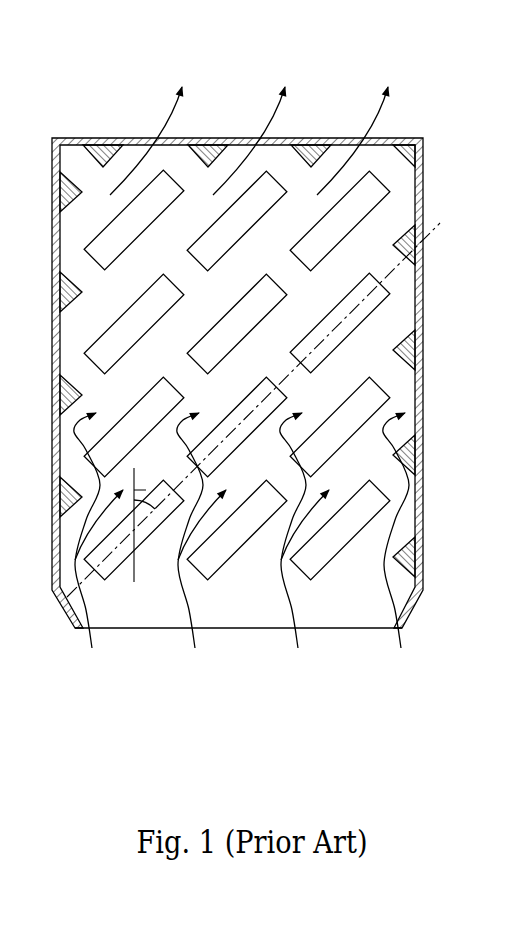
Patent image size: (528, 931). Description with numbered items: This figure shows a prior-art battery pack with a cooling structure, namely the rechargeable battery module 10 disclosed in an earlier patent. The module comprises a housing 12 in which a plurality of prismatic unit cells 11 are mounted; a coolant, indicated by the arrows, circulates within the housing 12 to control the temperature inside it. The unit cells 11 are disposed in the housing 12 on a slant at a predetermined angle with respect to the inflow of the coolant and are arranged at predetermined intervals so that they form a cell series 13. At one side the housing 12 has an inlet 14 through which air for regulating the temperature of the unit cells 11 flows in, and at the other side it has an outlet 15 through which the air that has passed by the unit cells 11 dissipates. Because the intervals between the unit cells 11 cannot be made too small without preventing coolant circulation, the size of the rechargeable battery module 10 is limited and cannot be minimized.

The rechargeable battery module 10 is at (272, 306).
The unit cells 11 is at (150, 527).
The housing 12 is at (423, 190).
The cell series 13 is at (188, 721).
The inlet 14 is at (348, 628).
The outlet 15 is at (177, 137).